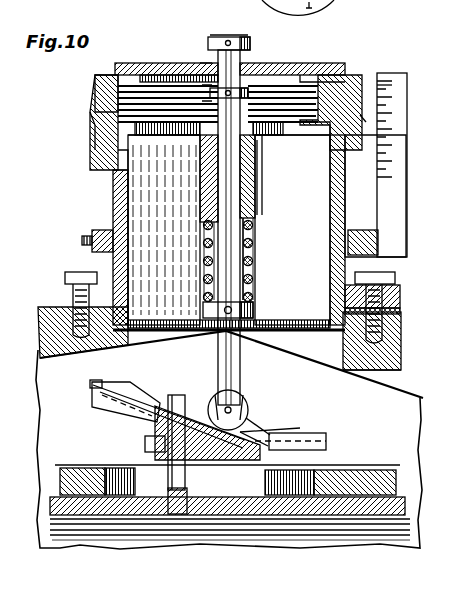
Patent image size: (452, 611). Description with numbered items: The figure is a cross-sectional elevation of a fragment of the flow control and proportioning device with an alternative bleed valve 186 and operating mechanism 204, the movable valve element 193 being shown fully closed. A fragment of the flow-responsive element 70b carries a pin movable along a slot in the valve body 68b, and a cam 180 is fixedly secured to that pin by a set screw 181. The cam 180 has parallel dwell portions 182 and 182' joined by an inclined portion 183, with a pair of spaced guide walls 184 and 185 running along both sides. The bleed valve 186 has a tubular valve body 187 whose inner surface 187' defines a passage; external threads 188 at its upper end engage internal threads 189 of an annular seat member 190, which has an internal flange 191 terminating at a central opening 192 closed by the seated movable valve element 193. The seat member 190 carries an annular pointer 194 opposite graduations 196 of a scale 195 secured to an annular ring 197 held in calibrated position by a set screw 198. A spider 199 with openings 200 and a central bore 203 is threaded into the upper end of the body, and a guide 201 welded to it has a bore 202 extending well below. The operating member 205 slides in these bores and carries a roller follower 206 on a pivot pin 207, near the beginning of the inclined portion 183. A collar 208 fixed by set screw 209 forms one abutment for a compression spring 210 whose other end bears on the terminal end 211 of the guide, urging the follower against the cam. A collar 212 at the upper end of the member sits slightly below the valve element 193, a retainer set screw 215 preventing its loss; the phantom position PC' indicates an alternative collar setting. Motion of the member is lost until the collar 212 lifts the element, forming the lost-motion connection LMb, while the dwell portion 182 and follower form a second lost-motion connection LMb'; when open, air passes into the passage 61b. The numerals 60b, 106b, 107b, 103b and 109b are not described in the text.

The lost-motion connection LMb is at (176, 32).
The set screw 215 is at (221, 36).
The compression spring 210 is at (246, 36).
The roller follower 206 is at (250, 62).
The movable valve element 193 is at (262, 68).
The central opening 192 is at (310, 66).
The internal flange 191 is at (338, 74).
The annular seat member 190 is at (380, 76).
The collar 212 is at (200, 63).
The internal threads 189 is at (92, 100).
The graduations 196 is at (392, 96).
The pitch circle collar PC' is at (244, 98).
The central bore 203 is at (250, 116).
The annular pointer 194 is at (366, 122).
The inner surface 187' is at (61, 131).
The external threads 188 is at (140, 170).
The openings 200 is at (320, 134).
The spider 199 is at (314, 152).
The scale 195 is at (400, 158).
The annular ring 197 is at (372, 230).
The bleed valve 186 is at (110, 190).
The bore 202 is at (217, 180).
The guide 201 is at (257, 194).
The tubular valve body 187 is at (83, 247).
The set screw 198 is at (92, 236).
The terminal end 211 is at (254, 227).
The detent spring 106b is at (82, 244).
The operating mechanism 204 is at (258, 260).
The bolt 60b is at (56, 304).
The bolt 107b is at (378, 284).
The collar 208 is at (256, 308).
The clamp block 103b is at (398, 300).
The shim 109b is at (396, 322).
The set screw 209 is at (205, 314).
The operating member 205 is at (222, 345).
The passage 61b is at (396, 370).
The dwell portion 182' is at (97, 367).
The inclined portion 183 is at (165, 388).
The pivot pin 207 is at (220, 400).
The guide wall 185 is at (250, 410).
The cam 180 is at (270, 432).
The guide wall 184 is at (92, 393).
The dwell portion 182 is at (312, 418).
The lost-motion connection LMb' is at (330, 438).
The set screw 181 is at (146, 446).
The valve body 68b is at (334, 472).
The flow-responsive element 70b is at (118, 520).